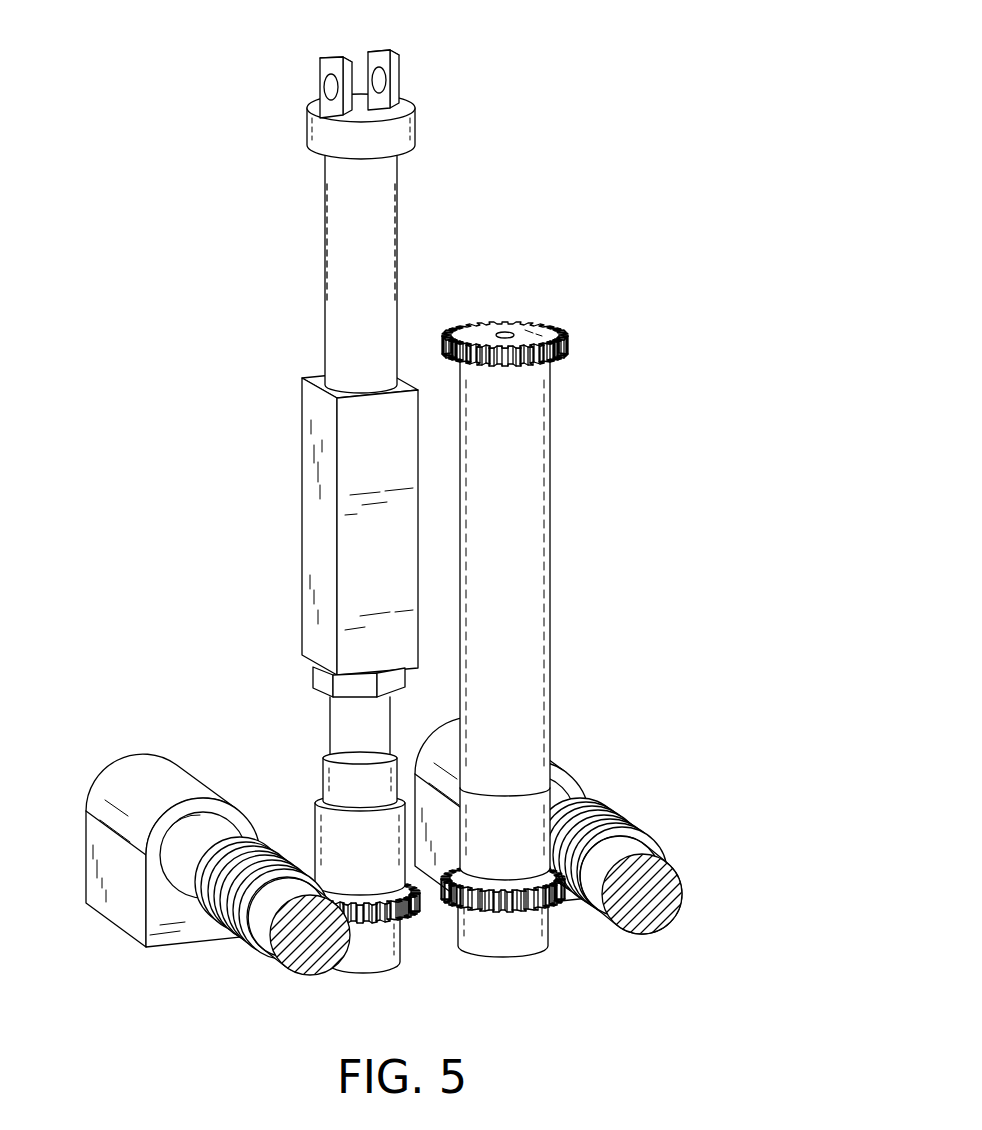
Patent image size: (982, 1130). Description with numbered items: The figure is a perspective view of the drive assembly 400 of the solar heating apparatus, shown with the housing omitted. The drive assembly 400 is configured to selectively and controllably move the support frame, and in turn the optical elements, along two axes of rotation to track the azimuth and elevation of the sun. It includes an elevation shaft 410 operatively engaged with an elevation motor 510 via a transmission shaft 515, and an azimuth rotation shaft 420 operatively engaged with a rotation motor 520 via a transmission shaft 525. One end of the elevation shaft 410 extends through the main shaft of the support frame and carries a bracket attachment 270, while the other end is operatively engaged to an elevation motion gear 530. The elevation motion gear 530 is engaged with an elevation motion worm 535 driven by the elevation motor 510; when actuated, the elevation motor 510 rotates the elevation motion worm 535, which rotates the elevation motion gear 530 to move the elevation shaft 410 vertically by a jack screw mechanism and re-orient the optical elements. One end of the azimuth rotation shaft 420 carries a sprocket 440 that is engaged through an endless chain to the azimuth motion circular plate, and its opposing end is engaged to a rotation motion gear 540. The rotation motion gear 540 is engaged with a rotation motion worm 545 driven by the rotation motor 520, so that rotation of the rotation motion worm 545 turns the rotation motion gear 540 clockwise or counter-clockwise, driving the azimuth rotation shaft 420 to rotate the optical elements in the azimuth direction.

The bracket attachment 270 is at (270, 73).
The drive assembly 400 is at (723, 86).
The elevation shaft 410 is at (252, 474).
The azimuth rotation shaft 420 is at (601, 514).
The sprocket 440 is at (506, 322).
The elevation motor 510 is at (133, 752).
The transmission shaft 515 is at (205, 830).
The rotation motor 520 is at (562, 753).
The transmission shaft 525 is at (573, 778).
The elevation motion gear 530 is at (444, 925).
The elevation motion worm 535 is at (240, 950).
The rotation motion gear 540 is at (563, 907).
The rotation motion worm 545 is at (648, 830).